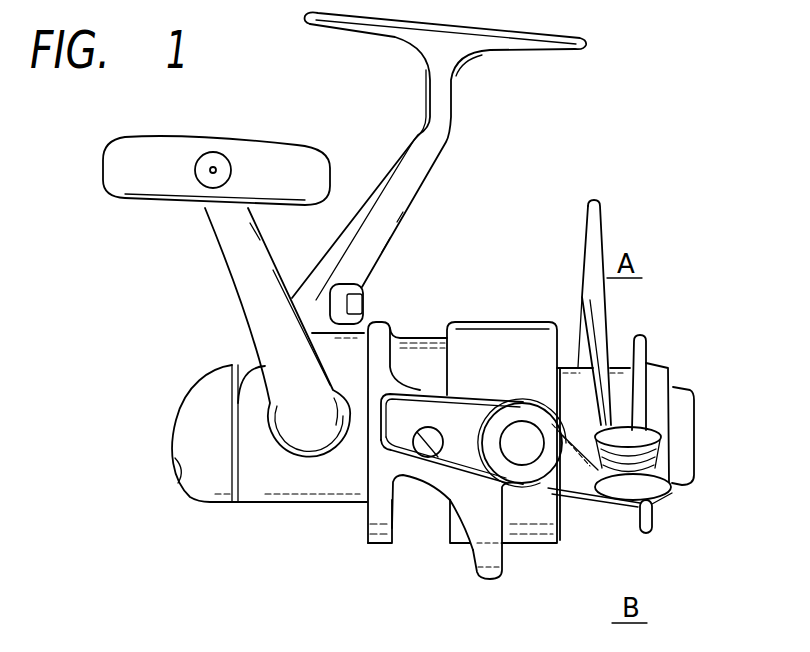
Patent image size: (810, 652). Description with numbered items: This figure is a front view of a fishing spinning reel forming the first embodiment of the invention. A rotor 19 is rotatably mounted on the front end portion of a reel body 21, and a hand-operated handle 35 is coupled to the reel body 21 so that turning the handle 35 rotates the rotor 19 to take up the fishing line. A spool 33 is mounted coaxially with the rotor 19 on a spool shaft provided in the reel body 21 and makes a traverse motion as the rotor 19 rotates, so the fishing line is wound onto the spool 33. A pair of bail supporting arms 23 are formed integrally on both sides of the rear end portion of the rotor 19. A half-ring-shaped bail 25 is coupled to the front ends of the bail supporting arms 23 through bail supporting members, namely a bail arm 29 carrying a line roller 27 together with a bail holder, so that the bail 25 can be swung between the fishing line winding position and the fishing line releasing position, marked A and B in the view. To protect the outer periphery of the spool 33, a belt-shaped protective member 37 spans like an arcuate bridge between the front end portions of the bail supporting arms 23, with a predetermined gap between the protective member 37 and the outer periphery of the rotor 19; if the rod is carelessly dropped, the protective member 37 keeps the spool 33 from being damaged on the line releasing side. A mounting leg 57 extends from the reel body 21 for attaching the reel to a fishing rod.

The rotor 19 is at (415, 518).
The reel body 21 is at (253, 490).
The bail supporting arms 23 is at (423, 393).
The bail 25 is at (595, 232).
The line roller 27 is at (683, 397).
The bail arm 29 is at (595, 504).
The spool 33 is at (610, 366).
The hand-operated handle 35 is at (233, 246).
The protective member 37 is at (495, 553).
The mounting leg 57 is at (438, 140).